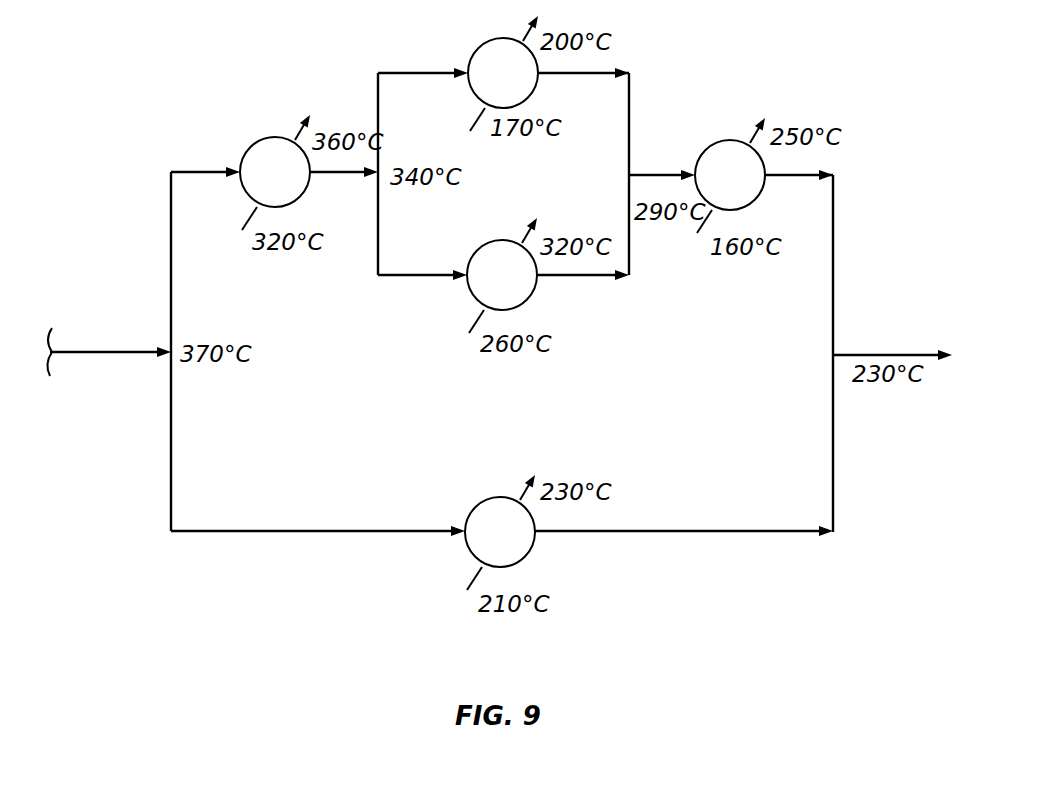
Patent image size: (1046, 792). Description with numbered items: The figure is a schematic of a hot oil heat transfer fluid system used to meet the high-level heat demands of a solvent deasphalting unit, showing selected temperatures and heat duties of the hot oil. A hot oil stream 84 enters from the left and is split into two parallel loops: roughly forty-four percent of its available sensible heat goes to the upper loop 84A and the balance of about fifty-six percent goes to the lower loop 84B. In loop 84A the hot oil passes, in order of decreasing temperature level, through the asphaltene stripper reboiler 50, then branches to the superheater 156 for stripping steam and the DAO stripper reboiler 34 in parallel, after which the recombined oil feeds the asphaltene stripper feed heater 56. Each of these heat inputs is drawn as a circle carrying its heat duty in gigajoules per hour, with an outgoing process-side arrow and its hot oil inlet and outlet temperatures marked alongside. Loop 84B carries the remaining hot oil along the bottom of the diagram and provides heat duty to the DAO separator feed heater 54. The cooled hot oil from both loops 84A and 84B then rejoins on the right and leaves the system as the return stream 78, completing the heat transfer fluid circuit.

The asphaltene stripper reboiler 50 is at (281, 138).
The superheater 156 is at (507, 39).
The DAO stripper reboiler 34 is at (506, 241).
The asphaltene stripper feed heater 56 is at (733, 141).
The DAO separator feed heater 54 is at (503, 498).
The hot oil stream 84 is at (124, 351).
The loop 84A is at (171, 212).
The loop 84B is at (170, 490).
The combined outlet stream 78 is at (865, 354).